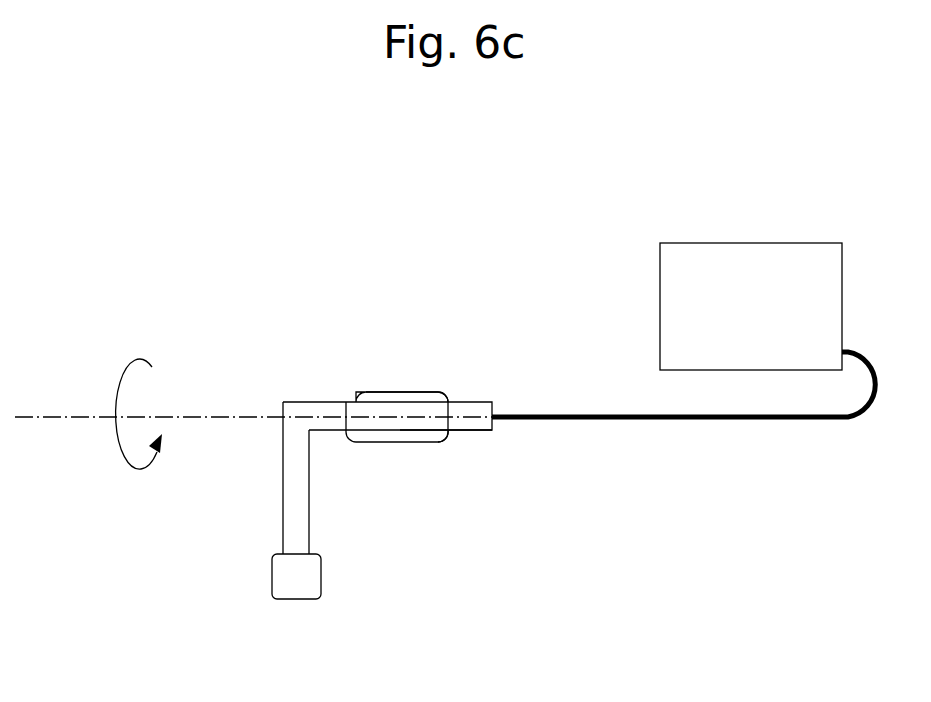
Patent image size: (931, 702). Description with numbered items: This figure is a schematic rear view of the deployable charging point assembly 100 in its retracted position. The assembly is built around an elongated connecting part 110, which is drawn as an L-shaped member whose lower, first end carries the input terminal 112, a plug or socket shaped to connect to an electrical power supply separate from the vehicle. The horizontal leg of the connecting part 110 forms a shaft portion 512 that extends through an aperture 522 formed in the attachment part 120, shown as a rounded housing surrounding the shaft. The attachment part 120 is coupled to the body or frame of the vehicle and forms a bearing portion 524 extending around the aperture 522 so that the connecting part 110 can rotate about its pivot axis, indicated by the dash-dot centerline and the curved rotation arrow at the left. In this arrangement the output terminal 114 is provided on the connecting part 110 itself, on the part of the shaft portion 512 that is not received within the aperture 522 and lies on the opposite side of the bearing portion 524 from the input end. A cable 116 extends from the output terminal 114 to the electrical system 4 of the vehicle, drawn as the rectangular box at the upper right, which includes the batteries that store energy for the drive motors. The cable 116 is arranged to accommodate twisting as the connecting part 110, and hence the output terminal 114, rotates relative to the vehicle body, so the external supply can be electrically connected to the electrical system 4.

The deployable charging point assembly 100 is at (251, 237).
The connecting part 110 is at (290, 510).
The input terminal 112 is at (297, 590).
The output terminal 114 is at (492, 421).
The cables 116 is at (650, 421).
The attachment part 120 is at (363, 392).
The shaft portion 512 is at (470, 430).
The aperture 522 is at (414, 400).
The bearing portion 524 is at (442, 392).
The electrical system 4 is at (725, 243).